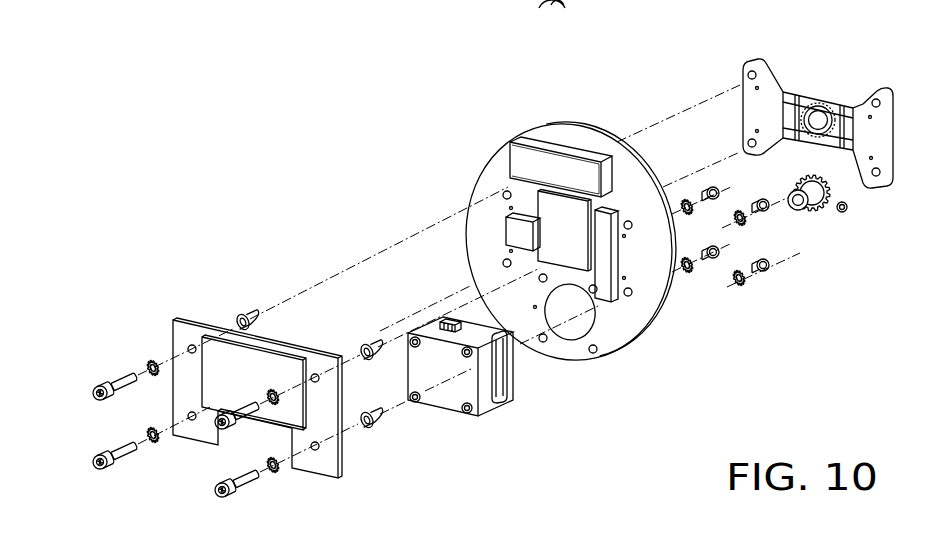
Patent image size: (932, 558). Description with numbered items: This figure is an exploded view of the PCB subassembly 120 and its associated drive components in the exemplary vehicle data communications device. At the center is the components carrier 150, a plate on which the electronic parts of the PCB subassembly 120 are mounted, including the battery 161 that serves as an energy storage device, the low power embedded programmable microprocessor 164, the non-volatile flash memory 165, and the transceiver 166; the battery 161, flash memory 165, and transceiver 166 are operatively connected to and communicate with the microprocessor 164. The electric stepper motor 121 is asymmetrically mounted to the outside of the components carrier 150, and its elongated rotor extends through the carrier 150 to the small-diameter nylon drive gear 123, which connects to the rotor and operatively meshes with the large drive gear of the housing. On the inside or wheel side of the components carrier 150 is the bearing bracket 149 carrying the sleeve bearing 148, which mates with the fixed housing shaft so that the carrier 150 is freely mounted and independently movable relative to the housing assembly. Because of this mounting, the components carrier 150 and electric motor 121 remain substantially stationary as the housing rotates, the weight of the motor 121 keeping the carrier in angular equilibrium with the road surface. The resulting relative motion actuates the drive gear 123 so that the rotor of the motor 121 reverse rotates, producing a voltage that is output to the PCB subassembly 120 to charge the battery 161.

The PCB subassembly 120 is at (632, 108).
The electric stepper motor 121 is at (437, 398).
The small drive gear 123 is at (815, 210).
The sleeve bearing 148 is at (633, 15).
The bearing bracket 149 is at (768, 62).
The components carrier 150 is at (481, 166).
The battery 161 is at (556, 147).
The microprocessor 164 is at (505, 238).
The flash memory 165 is at (560, 249).
The transceiver 166 is at (621, 262).